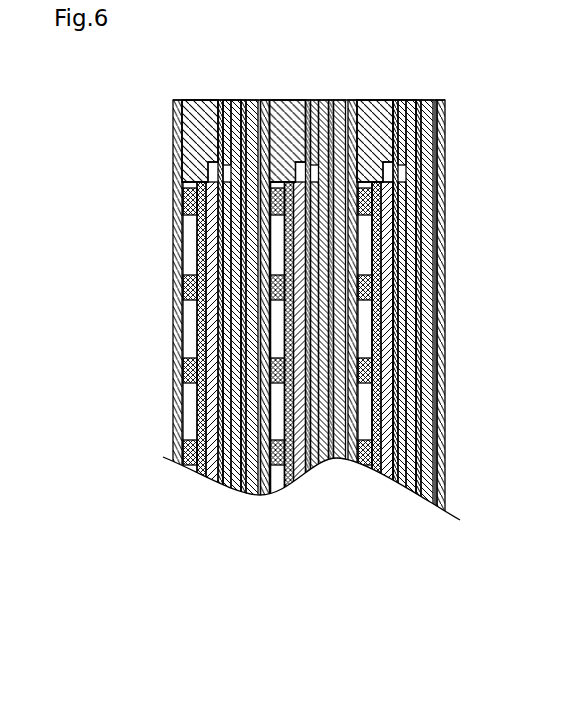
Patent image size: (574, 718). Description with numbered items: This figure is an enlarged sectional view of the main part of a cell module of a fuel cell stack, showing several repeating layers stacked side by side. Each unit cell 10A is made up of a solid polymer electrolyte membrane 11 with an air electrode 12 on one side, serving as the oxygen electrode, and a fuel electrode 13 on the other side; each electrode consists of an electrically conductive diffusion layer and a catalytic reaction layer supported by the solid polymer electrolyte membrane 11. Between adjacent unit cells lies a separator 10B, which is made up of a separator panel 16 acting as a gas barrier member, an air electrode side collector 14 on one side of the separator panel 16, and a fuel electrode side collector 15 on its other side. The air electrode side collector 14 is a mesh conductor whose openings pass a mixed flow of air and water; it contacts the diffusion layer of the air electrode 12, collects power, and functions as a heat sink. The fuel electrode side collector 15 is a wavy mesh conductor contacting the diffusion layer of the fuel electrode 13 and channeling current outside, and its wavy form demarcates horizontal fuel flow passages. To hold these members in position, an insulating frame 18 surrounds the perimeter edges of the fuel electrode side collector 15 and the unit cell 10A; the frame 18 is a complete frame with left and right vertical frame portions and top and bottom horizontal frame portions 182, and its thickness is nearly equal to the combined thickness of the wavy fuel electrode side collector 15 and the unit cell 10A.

The frame 18 is at (285, 100).
The horizontal frame portion 182 is at (365, 100).
The air electrode side collector 14 is at (232, 490).
The separator panel 16 is at (267, 490).
The fuel electrode side collector 15 is at (275, 468).
The fuel electrode 13 is at (378, 473).
The solid polymer electrolyte membrane 11 is at (397, 480).
The air electrode 12 is at (437, 507).
The unit cell 10A is at (401, 335).
The separator 10B is at (259, 355).